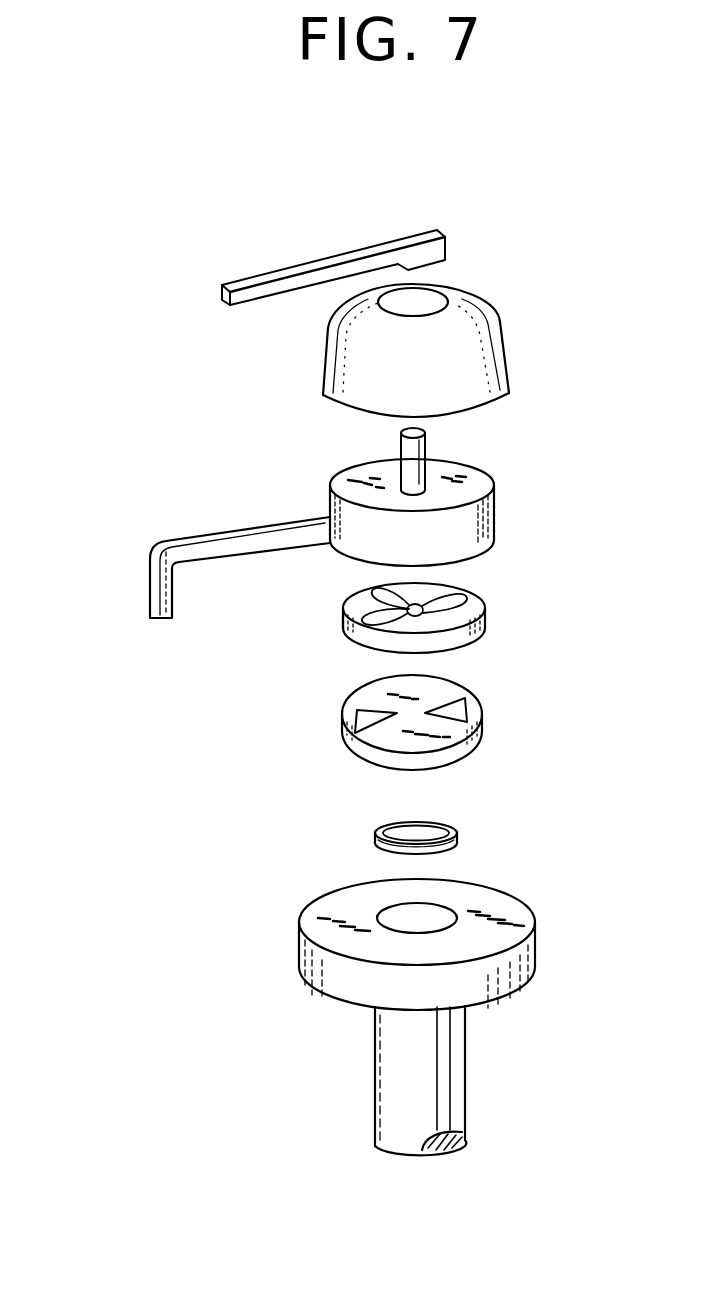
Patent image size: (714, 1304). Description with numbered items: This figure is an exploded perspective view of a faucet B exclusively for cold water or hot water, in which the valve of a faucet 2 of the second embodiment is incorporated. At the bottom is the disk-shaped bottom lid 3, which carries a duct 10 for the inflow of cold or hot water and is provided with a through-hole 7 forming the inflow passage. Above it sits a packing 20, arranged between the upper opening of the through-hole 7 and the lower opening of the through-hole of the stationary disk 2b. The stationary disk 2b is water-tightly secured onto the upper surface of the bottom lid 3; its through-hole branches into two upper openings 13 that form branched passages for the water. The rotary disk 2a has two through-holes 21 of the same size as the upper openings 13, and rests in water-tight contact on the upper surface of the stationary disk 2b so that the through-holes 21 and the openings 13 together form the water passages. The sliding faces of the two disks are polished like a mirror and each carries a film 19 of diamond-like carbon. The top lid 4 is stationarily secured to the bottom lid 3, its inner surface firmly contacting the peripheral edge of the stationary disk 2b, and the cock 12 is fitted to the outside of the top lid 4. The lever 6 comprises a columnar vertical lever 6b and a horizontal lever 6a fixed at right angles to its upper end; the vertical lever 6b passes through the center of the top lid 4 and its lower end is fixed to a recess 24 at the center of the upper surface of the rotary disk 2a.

The faucet B is at (548, 263).
The lever 6 is at (324, 242).
The horizontal lever 6a is at (300, 267).
The vertical lever 6b is at (408, 453).
The top lid 4 is at (497, 513).
The cock 12 is at (148, 600).
The valve of a faucet 2 is at (522, 662).
The rotary disk 2a is at (485, 612).
The recess 24 is at (353, 600).
The through-holes 21 is at (347, 637).
The stationary disk 2b is at (483, 727).
The film 19 is at (376, 695).
The upper openings 13 is at (347, 747).
The packing 20 is at (457, 833).
The through-hole 7 is at (430, 915).
The bottom lid 3 is at (533, 943).
The duct 10 is at (463, 1068).